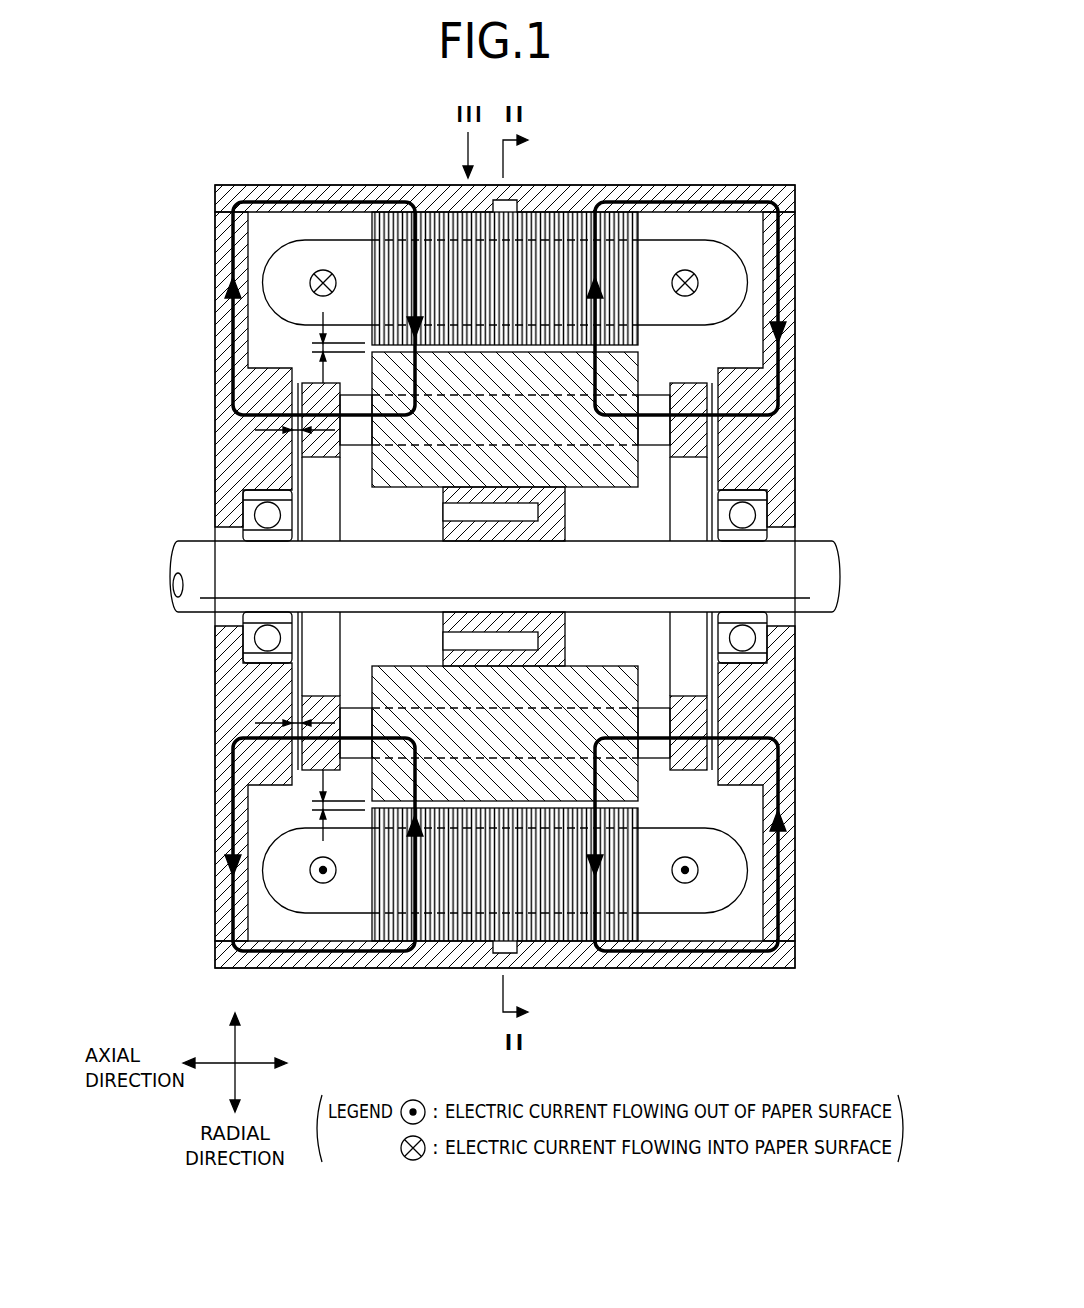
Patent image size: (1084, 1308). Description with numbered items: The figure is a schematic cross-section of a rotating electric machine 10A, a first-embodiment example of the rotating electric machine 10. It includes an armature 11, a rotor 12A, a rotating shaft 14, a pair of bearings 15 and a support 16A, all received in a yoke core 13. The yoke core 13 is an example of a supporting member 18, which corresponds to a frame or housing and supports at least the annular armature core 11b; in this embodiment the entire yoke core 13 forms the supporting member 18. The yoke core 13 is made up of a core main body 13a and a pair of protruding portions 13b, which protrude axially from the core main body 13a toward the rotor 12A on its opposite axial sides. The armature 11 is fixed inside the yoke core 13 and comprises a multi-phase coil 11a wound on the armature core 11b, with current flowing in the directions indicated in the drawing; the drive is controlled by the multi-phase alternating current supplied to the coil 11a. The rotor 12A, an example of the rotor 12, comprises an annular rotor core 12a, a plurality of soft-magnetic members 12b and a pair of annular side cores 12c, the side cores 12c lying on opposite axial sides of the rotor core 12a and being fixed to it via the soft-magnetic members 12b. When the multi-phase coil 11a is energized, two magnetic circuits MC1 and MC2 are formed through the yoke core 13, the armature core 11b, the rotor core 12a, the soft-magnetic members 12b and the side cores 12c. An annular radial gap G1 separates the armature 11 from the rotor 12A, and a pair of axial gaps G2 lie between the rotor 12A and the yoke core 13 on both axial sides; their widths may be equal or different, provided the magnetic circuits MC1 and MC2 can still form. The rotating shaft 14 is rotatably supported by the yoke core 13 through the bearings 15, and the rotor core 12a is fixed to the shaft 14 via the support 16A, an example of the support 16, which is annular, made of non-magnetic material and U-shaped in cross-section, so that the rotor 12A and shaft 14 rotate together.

The rotating electric machine 10 is at (451, 534).
The rotating electric machine 10A is at (265, 175).
The armature 11 is at (505, 577).
The multi-phase coil 11a is at (350, 265).
The armature core 11b is at (480, 275).
The rotor 12 is at (510, 579).
The rotor 12A is at (510, 557).
The rotor core 12a is at (548, 365).
The soft-magnetic members 12b is at (652, 408).
The side cores 12c is at (690, 403).
The yoke core 13 is at (525, 586).
The core main body 13a is at (802, 205).
The protruding portions 13b is at (505, 576).
The rotating shaft 14 is at (218, 575).
The bearings 15 is at (268, 520).
The support 16 is at (567, 576).
The support 16A is at (552, 515).
The supporting member 18 is at (561, 555).
The magnetic circuit MC1 is at (233, 262).
The magnetic circuit MC2 is at (790, 278).
The radial gap G1 is at (318, 576).
The axial gaps G2 is at (295, 432).